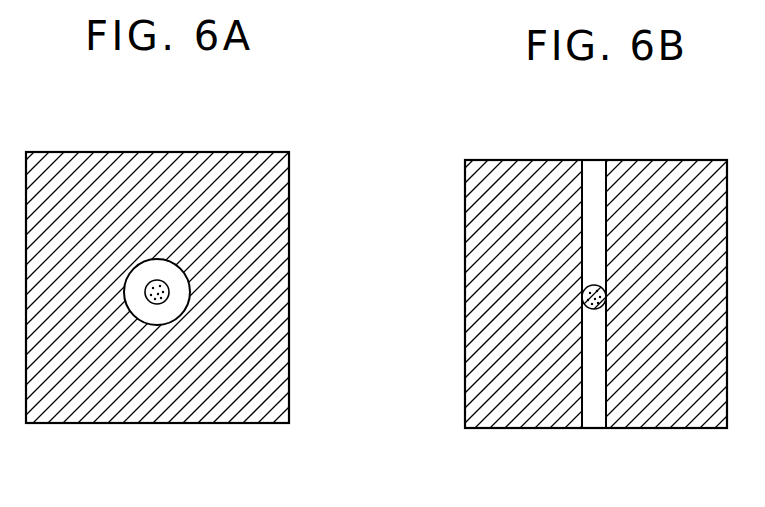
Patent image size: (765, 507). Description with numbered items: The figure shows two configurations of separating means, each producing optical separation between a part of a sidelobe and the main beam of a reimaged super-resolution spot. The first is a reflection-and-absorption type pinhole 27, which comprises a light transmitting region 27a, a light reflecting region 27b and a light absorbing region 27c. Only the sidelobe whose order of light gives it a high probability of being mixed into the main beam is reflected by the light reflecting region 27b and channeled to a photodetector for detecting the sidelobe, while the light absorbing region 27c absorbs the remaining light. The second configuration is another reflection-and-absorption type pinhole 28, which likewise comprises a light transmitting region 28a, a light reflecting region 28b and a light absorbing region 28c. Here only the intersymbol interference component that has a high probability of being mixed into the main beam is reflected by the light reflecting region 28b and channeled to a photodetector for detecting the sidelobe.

In FIG. 6A, the reflection-and-absorption type pinhole 27 is at (244, 137).
In FIG. 6A, the light transmitting region 27a is at (160, 303).
In FIG. 6A, the light reflecting region 27b is at (144, 310).
In FIG. 6A, the light absorbing region 27c is at (260, 222).
In FIG. 6B, the reflection-and-absorption type pinhole 28 is at (673, 142).
In FIG. 6B, the light transmitting region 28a is at (599, 310).
In FIG. 6B, the light reflecting region 28b is at (592, 388).
In FIG. 6B, the light absorbing region 28c is at (483, 310).